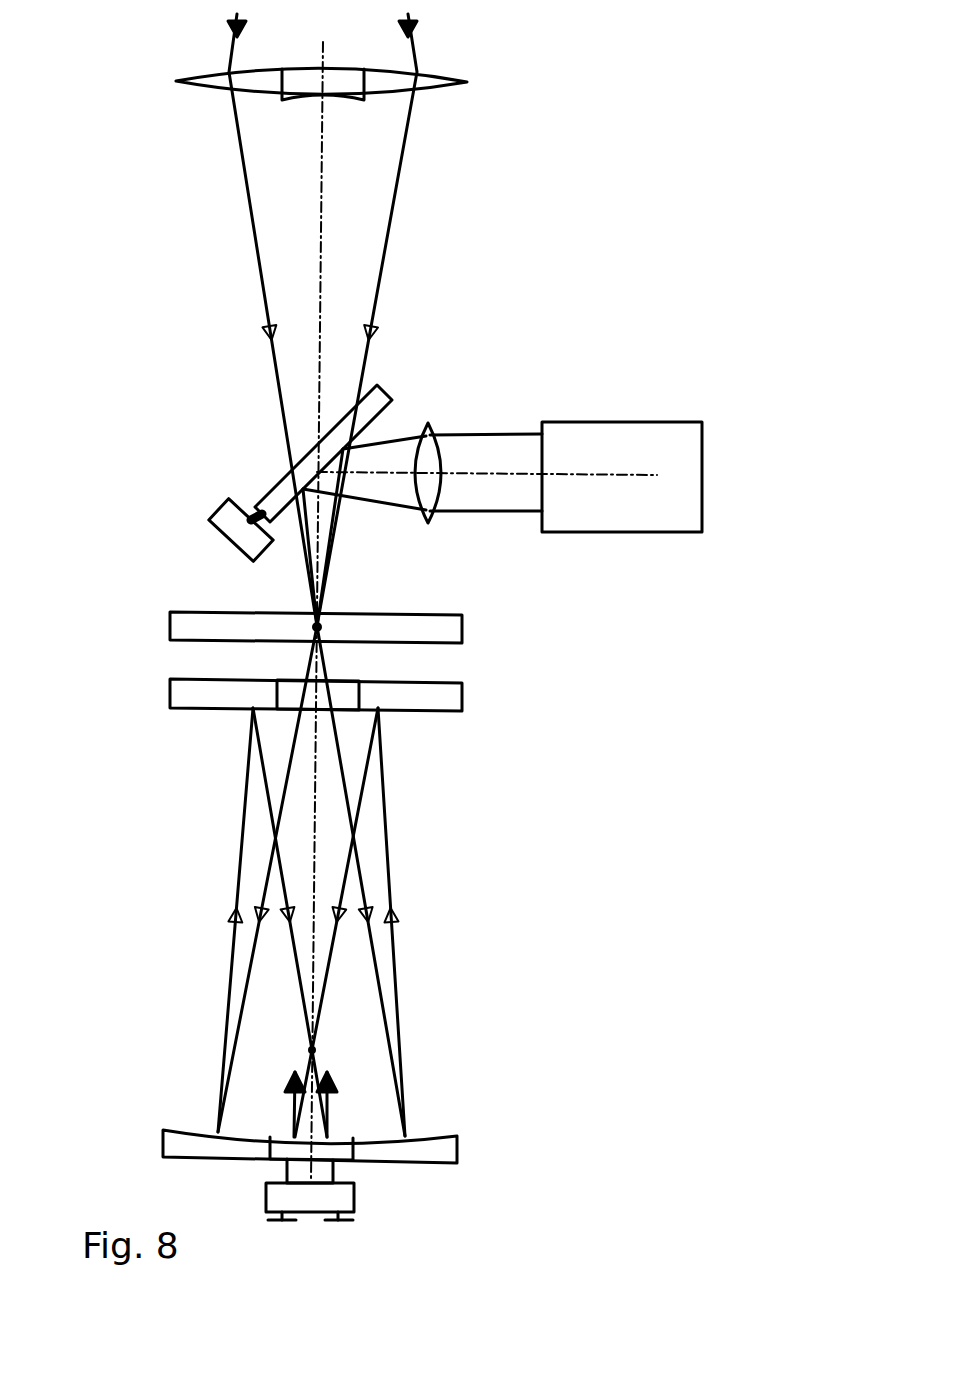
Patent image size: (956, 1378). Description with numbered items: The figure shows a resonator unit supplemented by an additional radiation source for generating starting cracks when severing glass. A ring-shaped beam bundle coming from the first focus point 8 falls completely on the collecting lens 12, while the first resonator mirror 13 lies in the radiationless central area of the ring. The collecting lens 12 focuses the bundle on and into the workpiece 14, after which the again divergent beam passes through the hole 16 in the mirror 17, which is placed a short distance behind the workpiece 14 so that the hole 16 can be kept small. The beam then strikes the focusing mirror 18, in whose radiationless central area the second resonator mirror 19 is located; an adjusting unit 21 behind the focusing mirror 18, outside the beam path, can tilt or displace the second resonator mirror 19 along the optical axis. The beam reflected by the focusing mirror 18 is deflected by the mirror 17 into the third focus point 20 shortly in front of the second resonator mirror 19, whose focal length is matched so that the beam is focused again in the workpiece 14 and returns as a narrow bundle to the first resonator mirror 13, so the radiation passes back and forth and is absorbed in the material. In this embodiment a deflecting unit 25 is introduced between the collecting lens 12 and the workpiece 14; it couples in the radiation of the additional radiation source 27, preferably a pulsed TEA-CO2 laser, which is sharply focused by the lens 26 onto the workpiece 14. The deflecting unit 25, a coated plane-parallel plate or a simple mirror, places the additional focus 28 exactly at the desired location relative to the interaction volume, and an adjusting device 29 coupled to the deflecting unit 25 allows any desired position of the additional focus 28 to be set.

The first focus point 8 is at (327, 618).
The collecting lens 12 is at (420, 72).
The first resonator mirror 13 is at (380, 90).
The workpiece 14 is at (450, 628).
The hole 16 is at (345, 695).
The mirror 17 is at (450, 698).
The focusing mirror 18 is at (443, 1148).
The second resonator mirror 19 is at (338, 1153).
The third focus point 20 is at (315, 1047).
The adjusting unit 21 is at (338, 1200).
The deflecting unit 25 is at (282, 496).
The lens 26 is at (427, 448).
The additional radiation source 27 is at (600, 442).
The additional focus 28 is at (322, 612).
The adjusting device 29 is at (228, 527).